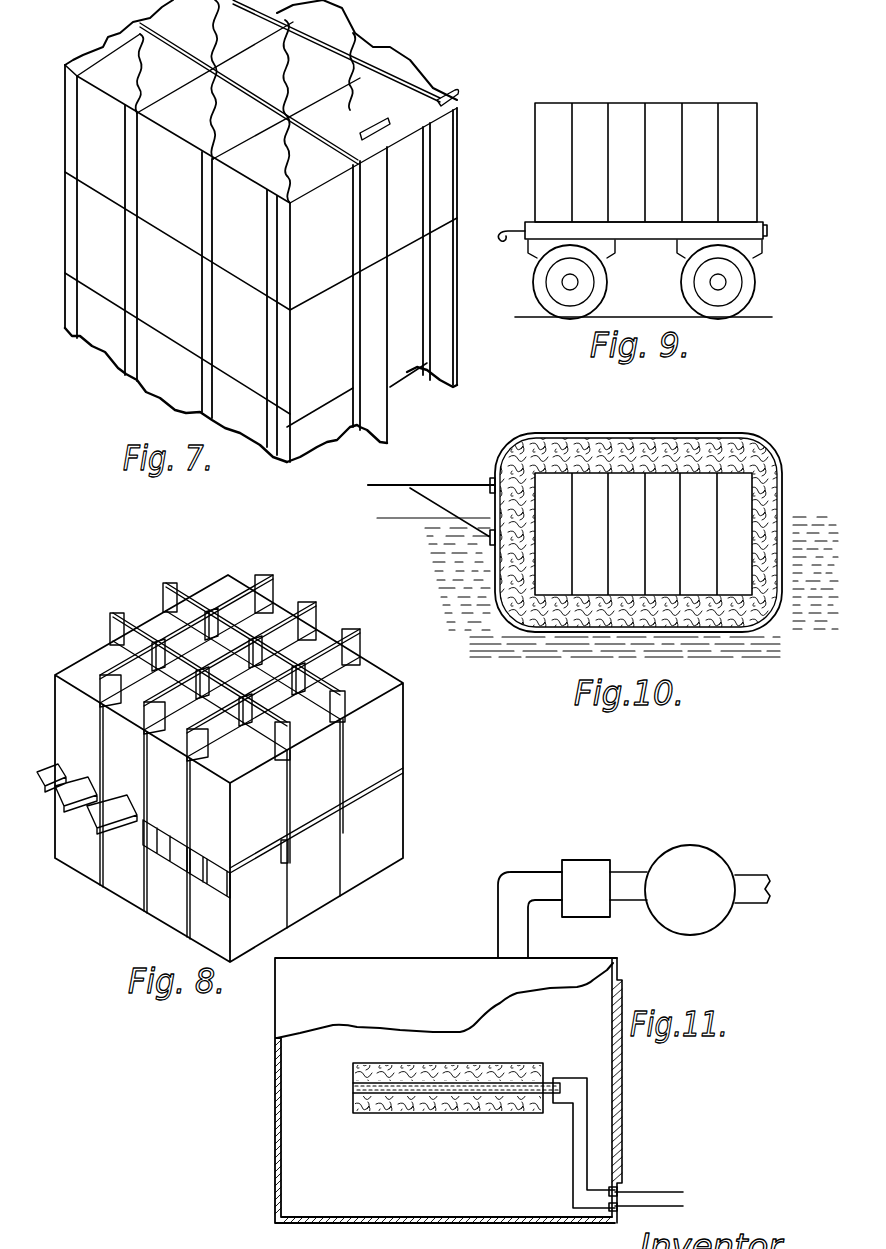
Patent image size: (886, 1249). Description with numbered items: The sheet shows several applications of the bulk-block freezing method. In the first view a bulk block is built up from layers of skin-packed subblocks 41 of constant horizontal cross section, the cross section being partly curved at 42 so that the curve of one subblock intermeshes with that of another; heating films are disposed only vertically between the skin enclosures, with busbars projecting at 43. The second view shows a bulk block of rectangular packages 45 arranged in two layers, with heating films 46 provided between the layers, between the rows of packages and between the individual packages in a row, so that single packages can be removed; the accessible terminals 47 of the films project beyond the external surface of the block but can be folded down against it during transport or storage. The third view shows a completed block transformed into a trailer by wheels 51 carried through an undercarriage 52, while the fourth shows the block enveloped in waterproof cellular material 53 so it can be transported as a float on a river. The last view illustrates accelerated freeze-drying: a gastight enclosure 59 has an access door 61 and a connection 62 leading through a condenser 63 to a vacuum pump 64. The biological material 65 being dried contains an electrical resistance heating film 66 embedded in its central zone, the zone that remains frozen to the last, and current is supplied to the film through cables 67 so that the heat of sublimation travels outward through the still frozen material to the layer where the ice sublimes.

In FIG. 7, the subblocks 41 is at (180, 217).
In FIG. 7, the curved cross section portion 42 is at (352, 112).
In FIG. 7, the busbars 43 is at (447, 125).
In FIG. 8, the rectangular packages 45 is at (122, 875).
In FIG. 8, the heating films 46 is at (228, 655).
In FIG. 8, the accessible terminals 47 is at (358, 638).
In FIG. 9, the wheels 51 is at (688, 288).
In FIG. 9, the undercarriage 52 is at (537, 229).
In FIG. 10, the waterproof cellular material 53 is at (716, 438).
In FIG. 11, the gastight enclosure 59 is at (273, 1160).
In FIG. 11, the access door 61 is at (623, 1113).
In FIG. 11, the connection 62 is at (515, 897).
In FIG. 11, the condenser 63 is at (587, 868).
In FIG. 11, the vacuum pump 64 is at (697, 853).
In FIG. 11, the biological material 65 is at (483, 1065).
In FIG. 11, the electrical resistance heating film 66 is at (462, 1094).
In FIG. 11, the cables 67 is at (647, 1207).